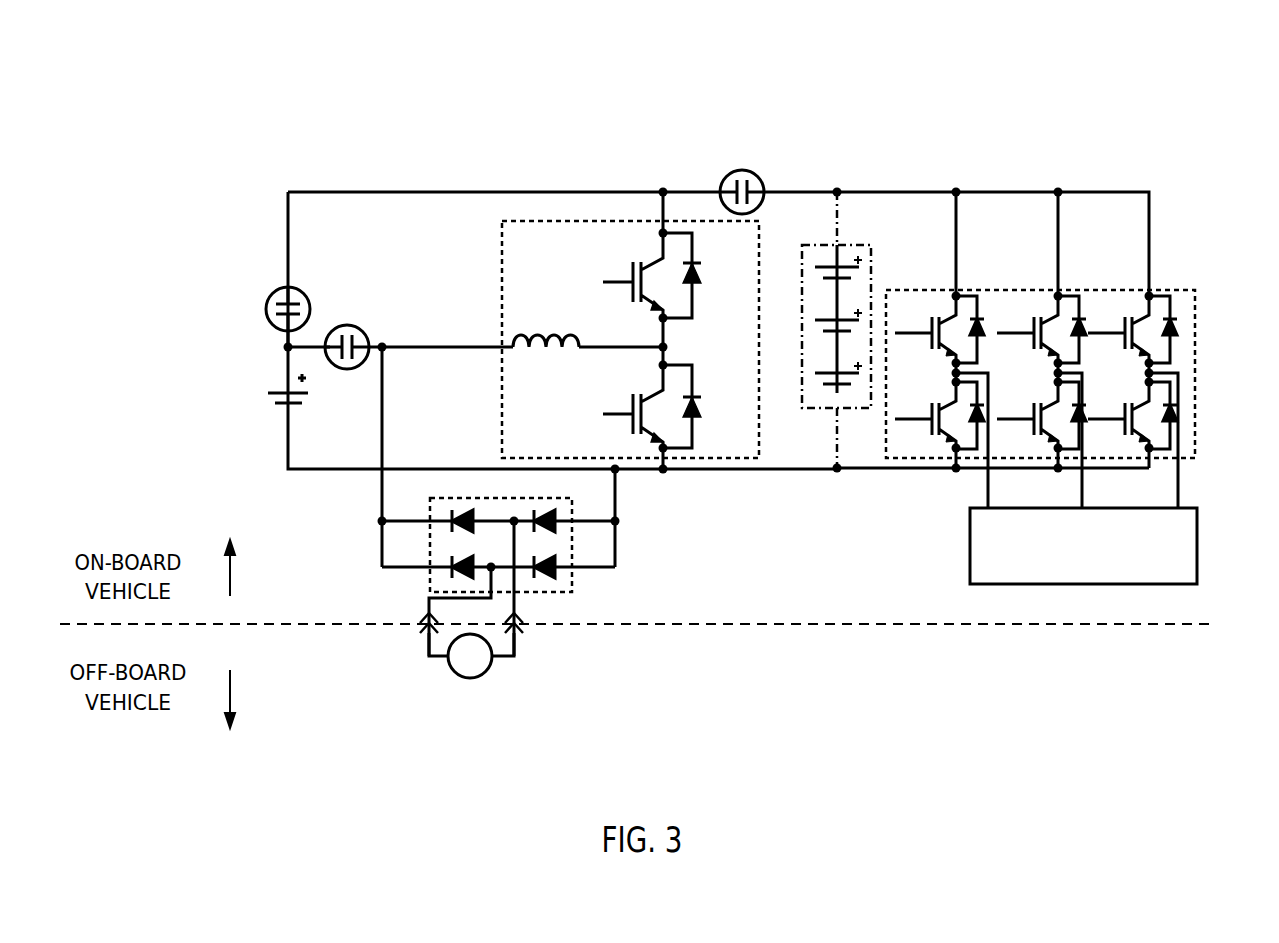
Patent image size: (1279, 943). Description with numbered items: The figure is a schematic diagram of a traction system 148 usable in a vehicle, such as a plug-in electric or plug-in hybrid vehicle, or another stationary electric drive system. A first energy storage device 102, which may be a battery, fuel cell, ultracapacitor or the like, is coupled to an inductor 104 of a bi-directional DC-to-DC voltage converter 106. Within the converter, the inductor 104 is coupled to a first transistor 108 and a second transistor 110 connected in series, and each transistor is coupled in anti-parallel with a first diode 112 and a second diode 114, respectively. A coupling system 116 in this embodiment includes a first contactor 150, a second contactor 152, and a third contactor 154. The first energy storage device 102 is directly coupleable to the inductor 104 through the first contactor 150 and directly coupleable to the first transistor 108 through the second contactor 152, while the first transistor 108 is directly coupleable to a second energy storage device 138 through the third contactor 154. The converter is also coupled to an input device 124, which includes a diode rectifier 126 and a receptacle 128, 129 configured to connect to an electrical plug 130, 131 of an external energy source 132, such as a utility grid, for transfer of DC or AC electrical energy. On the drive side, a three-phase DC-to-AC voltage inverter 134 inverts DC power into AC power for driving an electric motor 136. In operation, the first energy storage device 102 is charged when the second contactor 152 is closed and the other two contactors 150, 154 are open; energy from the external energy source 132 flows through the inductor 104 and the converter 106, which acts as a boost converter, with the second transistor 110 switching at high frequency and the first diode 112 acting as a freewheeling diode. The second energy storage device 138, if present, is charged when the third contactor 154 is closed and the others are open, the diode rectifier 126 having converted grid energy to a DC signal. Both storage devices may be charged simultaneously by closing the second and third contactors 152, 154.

The first energy storage device 102 is at (268, 392).
The inductor 104 is at (528, 345).
The bi-directional DC-to-DC voltage converter 106 is at (632, 460).
The first transistor 108 is at (620, 283).
The second transistor 110 is at (620, 410).
The first diode 112 is at (740, 258).
The second diode 114 is at (701, 418).
The coupling system 116 is at (358, 316).
The input device 124 is at (612, 635).
The diode rectifier 126 is at (572, 592).
The receptacle 128 is at (425, 616).
The receptacle 129 is at (528, 624).
The electrical plug 130 is at (423, 633).
The electrical plug 131 is at (519, 638).
The external energy source 132 is at (468, 680).
The three-phase DC-to-AC voltage inverter 134 is at (914, 290).
The electric motor 136 is at (1197, 568).
The second energy storage device 138 is at (804, 410).
The traction system 148 is at (460, 176).
The first contactor 150 is at (367, 333).
The second contactor 152 is at (281, 294).
The third contactor 154 is at (742, 170).